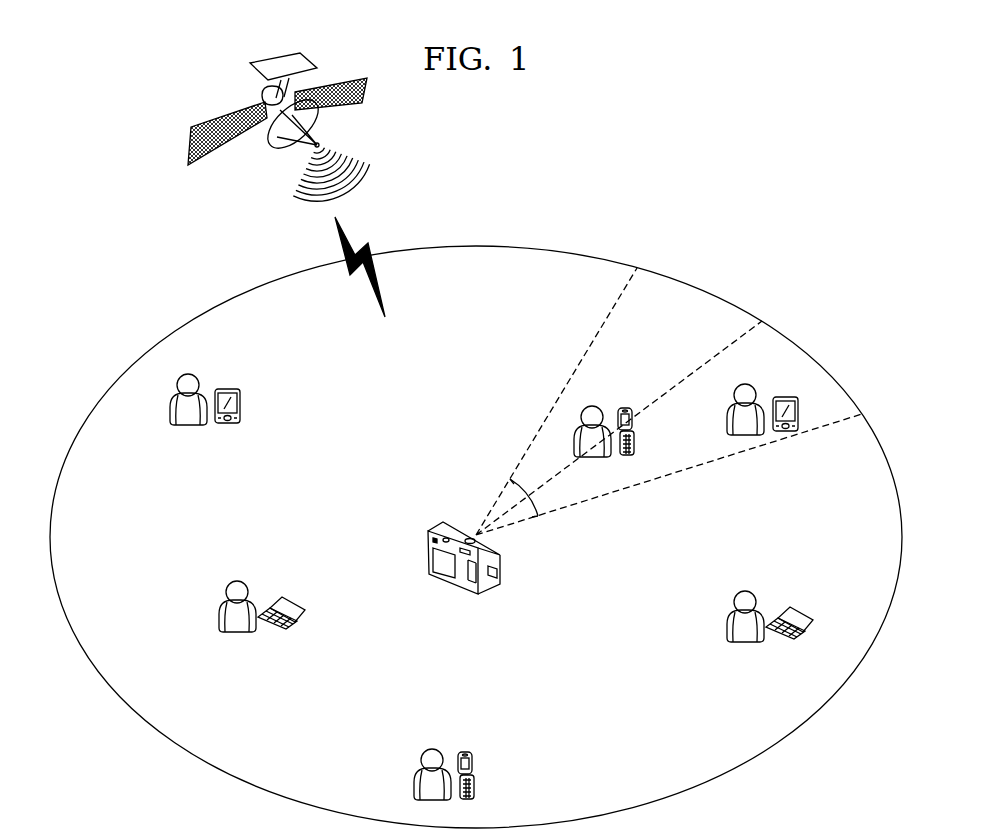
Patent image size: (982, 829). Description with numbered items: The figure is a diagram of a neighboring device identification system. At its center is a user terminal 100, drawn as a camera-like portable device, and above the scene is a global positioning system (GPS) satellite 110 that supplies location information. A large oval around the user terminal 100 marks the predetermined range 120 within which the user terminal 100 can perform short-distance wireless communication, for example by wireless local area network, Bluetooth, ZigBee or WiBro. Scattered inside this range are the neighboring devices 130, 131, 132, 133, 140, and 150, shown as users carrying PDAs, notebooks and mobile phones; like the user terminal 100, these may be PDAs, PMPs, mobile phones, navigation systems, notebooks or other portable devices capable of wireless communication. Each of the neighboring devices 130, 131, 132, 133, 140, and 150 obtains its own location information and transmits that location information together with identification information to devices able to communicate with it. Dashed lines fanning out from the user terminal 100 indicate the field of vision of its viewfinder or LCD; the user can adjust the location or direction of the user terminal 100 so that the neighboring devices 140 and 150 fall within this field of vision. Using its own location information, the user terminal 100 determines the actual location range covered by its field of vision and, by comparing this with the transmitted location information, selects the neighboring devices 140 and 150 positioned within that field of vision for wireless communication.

The user terminal 100 is at (448, 578).
The global positioning system (GPS) satellite 110 is at (340, 108).
The predetermined range 120 is at (902, 538).
The neighboring device 130 is at (240, 403).
The neighboring device 131 is at (288, 628).
The neighboring device 132 is at (475, 775).
The neighboring device 133 is at (795, 638).
The neighboring device 140 is at (786, 395).
The neighboring device 150 is at (635, 433).